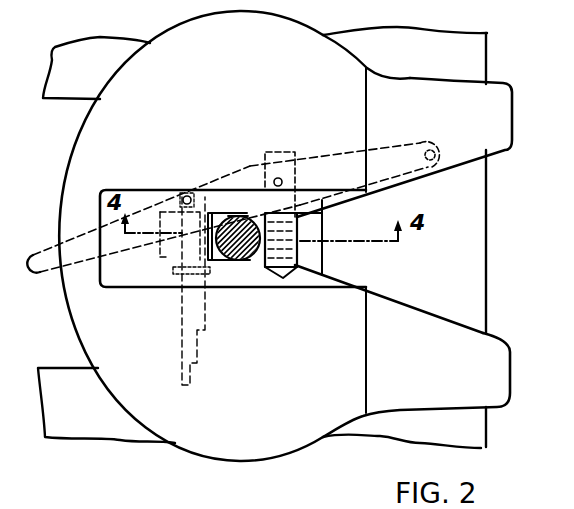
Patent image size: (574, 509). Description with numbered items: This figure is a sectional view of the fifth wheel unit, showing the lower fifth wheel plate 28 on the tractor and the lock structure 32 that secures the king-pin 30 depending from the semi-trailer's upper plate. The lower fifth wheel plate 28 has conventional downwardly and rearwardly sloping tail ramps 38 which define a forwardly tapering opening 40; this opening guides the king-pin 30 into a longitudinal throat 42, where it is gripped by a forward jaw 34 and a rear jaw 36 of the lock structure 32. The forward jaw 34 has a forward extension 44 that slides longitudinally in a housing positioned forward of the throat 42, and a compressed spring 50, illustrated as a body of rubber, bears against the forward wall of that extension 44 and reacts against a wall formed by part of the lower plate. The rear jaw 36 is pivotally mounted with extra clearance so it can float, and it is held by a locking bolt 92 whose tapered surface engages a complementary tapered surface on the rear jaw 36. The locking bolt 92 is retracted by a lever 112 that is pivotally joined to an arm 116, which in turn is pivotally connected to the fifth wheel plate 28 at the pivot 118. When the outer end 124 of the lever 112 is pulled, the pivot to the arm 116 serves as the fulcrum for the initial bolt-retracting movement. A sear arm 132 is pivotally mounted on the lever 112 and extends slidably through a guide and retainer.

The lower fifth wheel plate 28 is at (327, 103).
The king-pin 30 is at (298, 251).
The lock structure 32 is at (207, 175).
The forward jaw 34 is at (200, 262).
The rear jaw 36 is at (265, 263).
The tail ramps 38 is at (433, 88).
The forwardly tapering opening 40 is at (393, 300).
The longitudinal throat 42 is at (252, 207).
The forward extension 44 is at (106, 273).
The compressed spring 50 is at (163, 270).
The locking bolt 92 is at (298, 157).
The lever 112 is at (186, 191).
The arm 116 is at (390, 157).
The pivotal connection of arm to fifth wheel 118 is at (441, 149).
The outer end of lever 124 is at (38, 256).
The sear arm 132 is at (185, 318).